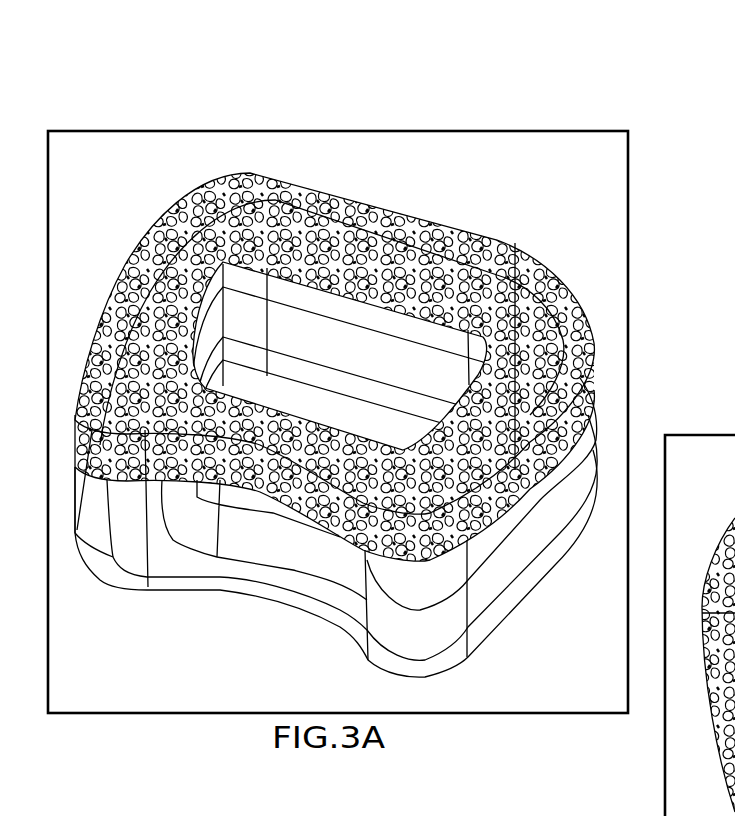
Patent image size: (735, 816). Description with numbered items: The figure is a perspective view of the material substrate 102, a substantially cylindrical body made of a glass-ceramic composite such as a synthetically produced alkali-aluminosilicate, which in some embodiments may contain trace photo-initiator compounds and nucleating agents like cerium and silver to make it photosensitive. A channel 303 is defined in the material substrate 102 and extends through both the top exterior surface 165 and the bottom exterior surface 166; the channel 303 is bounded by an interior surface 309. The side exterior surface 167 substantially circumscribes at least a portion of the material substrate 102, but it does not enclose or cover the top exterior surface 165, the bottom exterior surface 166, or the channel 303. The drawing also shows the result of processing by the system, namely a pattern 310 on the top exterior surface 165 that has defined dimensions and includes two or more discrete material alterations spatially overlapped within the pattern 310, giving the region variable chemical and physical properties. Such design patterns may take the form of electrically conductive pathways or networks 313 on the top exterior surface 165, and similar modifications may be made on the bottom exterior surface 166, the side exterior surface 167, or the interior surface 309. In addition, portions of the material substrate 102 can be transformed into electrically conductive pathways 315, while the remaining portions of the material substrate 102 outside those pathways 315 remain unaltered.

The material substrate 102 is at (398, 366).
The interior surface 309 is at (628, 141).
The channel 303 is at (353, 400).
The top exterior surface 165 is at (462, 478).
The pattern 310 is at (510, 370).
The electrically conductive pathways or networks 313 is at (530, 443).
The electrically conductive pathways 315 is at (345, 510).
The bottom exterior surface 166 is at (166, 549).
The side exterior surface 167 is at (487, 533).